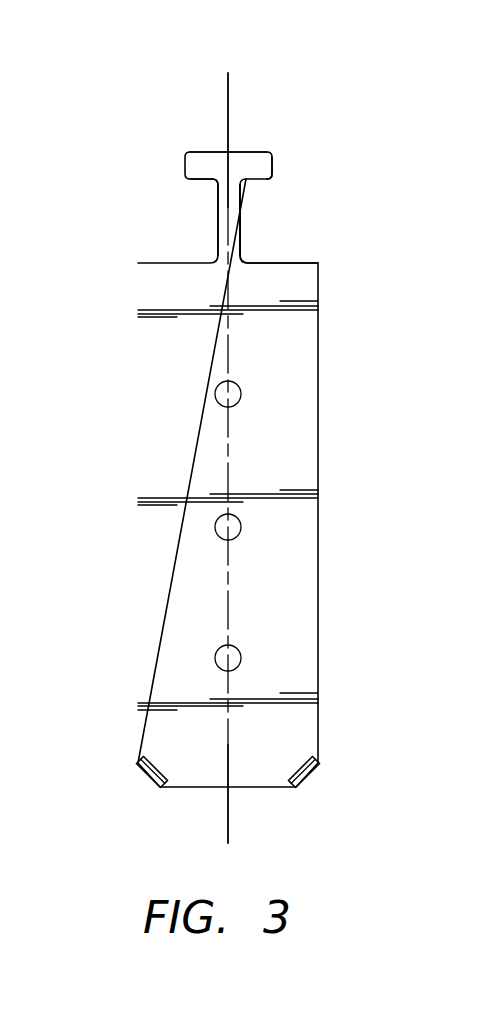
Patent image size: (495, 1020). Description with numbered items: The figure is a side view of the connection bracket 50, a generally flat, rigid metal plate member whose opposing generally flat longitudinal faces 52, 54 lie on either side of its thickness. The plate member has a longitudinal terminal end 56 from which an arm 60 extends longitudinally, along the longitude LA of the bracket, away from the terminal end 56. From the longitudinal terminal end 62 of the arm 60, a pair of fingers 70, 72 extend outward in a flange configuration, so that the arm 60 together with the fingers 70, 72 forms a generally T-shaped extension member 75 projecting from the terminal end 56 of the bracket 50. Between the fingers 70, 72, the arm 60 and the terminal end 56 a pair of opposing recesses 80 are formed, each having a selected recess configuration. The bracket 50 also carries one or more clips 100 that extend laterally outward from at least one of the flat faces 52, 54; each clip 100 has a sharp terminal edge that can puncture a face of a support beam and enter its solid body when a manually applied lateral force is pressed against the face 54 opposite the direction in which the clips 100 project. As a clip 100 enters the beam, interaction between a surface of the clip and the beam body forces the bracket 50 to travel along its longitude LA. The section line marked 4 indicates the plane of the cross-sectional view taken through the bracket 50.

The connection bracket 50 is at (137, 323).
The longitudinal face 52 is at (164, 437).
The longitudinal face 54 is at (137, 498).
The longitudinal terminal end 56 is at (297, 262).
The arm 60 is at (217, 208).
The longitudinal terminal end of the arm 62 is at (217, 182).
The finger 70 is at (184, 150).
The finger 72 is at (277, 162).
The T-shaped extension member 75 is at (250, 148).
The recess 80 is at (266, 222).
The clip 100 is at (160, 767).
The longitude LA is at (228, 484).
The section line 4- 4 is at (170, 832).